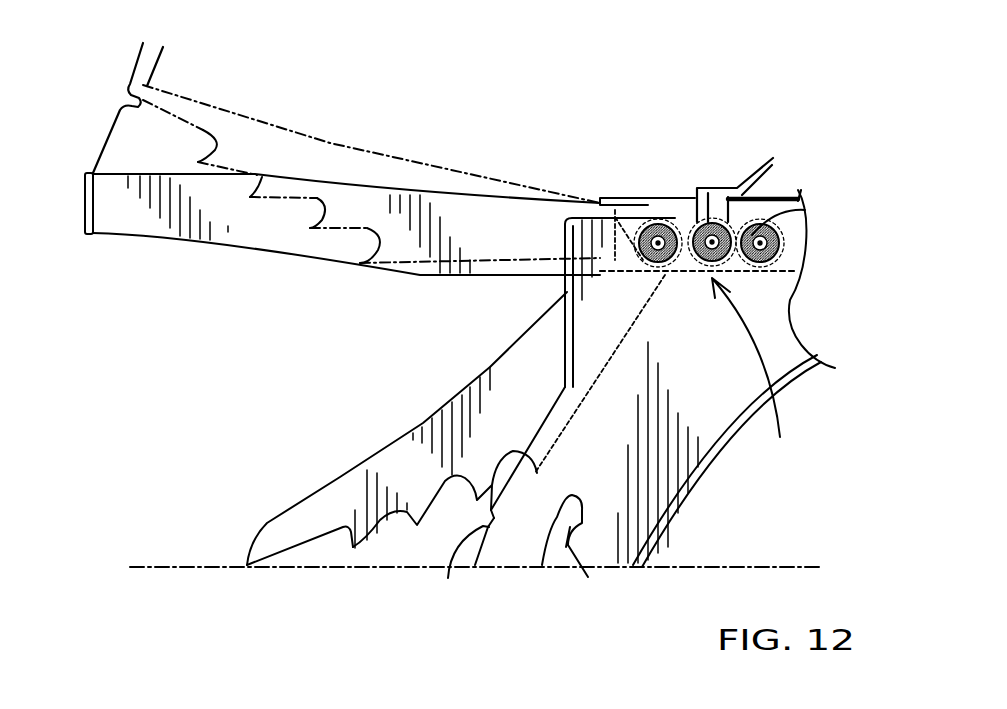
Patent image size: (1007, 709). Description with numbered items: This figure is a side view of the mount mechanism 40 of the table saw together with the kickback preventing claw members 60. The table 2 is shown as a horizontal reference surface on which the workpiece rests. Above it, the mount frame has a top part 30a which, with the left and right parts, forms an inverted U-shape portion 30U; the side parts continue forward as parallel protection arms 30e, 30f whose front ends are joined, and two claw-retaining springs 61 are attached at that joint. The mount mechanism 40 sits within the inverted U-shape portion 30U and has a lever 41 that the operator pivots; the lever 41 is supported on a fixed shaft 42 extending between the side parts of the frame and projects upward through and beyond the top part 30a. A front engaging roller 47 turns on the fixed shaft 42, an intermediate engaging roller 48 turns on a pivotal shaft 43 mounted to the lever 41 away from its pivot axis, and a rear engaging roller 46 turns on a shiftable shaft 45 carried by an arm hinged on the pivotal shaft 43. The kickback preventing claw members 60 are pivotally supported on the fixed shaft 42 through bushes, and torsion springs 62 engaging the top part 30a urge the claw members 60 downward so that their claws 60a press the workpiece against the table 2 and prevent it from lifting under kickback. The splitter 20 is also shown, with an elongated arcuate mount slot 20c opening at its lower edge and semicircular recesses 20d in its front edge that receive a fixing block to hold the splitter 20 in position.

The table 2 is at (163, 567).
The splitter 20 is at (623, 425).
The mount slot 20c is at (577, 560).
The semicircular recesses 20d is at (453, 562).
The top part 30a is at (826, 161).
The inverted U-shape portion 30U is at (799, 195).
The protection arm 30e is at (342, 253).
The protection arm 30f is at (230, 227).
The mount mechanism 40 is at (810, 363).
The lever 41 is at (703, 188).
The fixed shaft 42 is at (663, 277).
The pivotal shaft 43 is at (740, 263).
The shiftable shaft 45 is at (773, 245).
The rear engaging roller 46 is at (773, 208).
The front engaging roller 47 is at (643, 215).
The intermediate engaging roller 48 is at (717, 220).
The kickback preventing claw members 60 is at (371, 360).
The claws 60a is at (337, 547).
The claw-retaining springs 61 is at (133, 67).
The torsion springs 62 is at (632, 215).